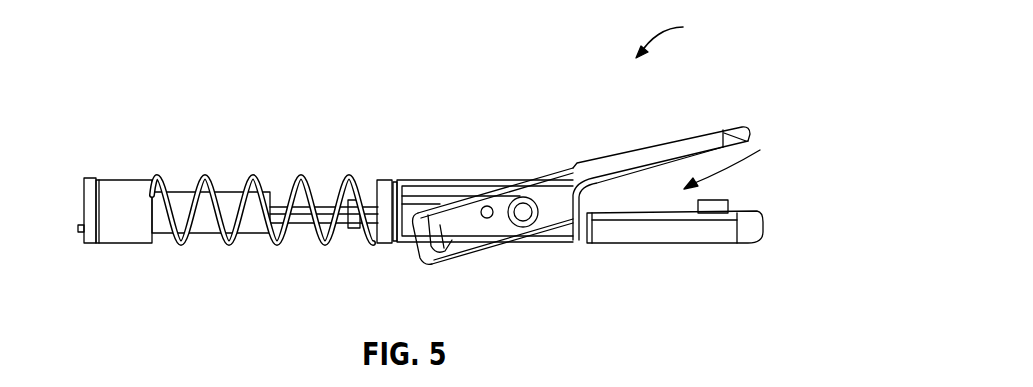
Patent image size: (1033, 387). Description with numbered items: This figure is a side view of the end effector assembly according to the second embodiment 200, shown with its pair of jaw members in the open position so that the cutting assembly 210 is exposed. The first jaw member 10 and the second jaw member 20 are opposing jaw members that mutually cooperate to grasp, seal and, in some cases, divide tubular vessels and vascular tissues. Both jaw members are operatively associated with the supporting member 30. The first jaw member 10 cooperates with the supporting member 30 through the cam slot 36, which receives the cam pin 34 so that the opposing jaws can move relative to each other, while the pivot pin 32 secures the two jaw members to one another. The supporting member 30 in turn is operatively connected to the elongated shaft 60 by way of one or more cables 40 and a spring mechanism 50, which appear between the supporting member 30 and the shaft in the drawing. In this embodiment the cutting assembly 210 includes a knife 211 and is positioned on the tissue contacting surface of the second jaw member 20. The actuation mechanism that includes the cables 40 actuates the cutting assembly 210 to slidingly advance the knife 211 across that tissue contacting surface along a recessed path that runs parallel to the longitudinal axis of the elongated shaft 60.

The second embodiment 200 is at (681, 38).
The first jaw member 10 is at (722, 128).
The second jaw member 20 is at (730, 244).
The supporting member 30 is at (423, 180).
The pivot pin 32 is at (524, 228).
The cam pin 34 is at (488, 205).
The cam slot 36 is at (431, 262).
The cables 40 is at (300, 243).
The spring mechanism 50 is at (228, 246).
The elongated shaft 60 is at (115, 246).
The cutting assembly 210 is at (746, 155).
The knife 211 is at (706, 200).